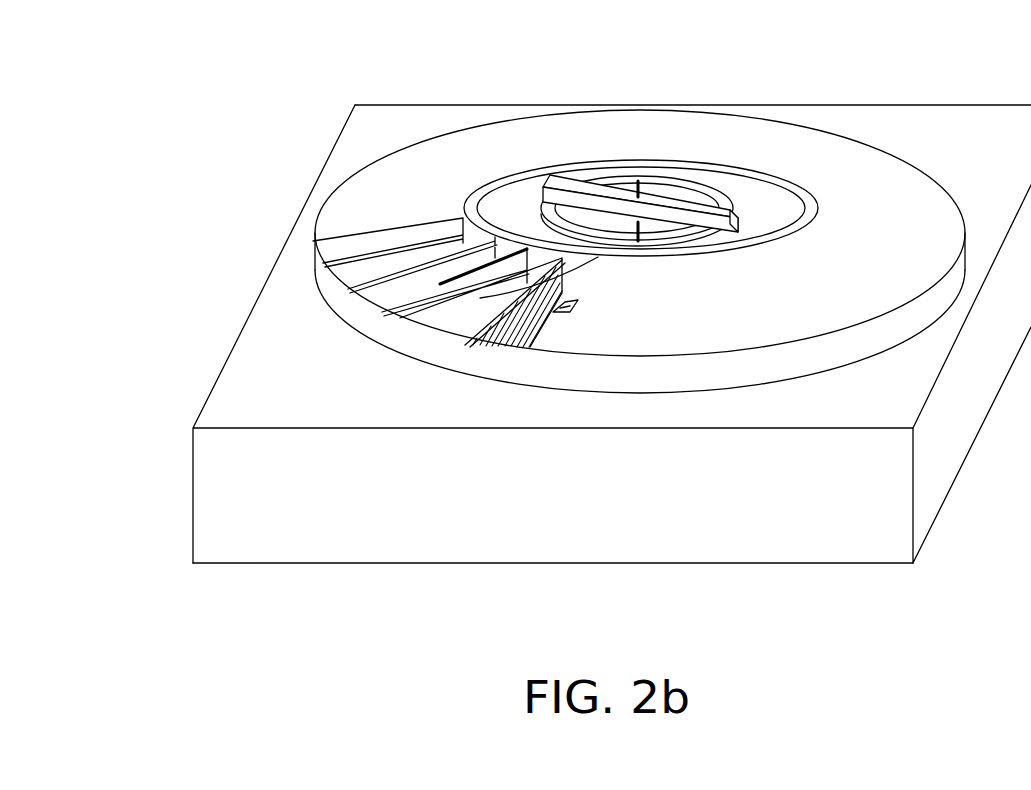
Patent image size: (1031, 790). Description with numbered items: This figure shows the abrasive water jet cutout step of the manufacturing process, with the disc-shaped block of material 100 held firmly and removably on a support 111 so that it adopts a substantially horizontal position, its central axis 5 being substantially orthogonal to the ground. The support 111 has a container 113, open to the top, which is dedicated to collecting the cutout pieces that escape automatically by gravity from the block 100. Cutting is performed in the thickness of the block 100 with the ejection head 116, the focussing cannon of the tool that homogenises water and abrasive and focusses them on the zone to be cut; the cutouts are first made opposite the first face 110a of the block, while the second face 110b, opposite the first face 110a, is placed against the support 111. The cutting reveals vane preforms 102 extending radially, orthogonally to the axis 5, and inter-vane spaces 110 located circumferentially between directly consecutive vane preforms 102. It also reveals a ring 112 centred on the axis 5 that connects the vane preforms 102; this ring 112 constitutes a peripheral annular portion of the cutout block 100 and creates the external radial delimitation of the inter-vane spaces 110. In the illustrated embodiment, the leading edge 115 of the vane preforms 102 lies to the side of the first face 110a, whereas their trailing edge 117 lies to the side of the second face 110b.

The block of material 100 is at (868, 122).
The support 111 is at (380, 105).
The container 113 is at (682, 517).
The inter-vane spaces 110 is at (335, 248).
The first face 110a is at (797, 315).
The second face 110b is at (640, 393).
The ring 112 is at (390, 333).
The leading edge 115 is at (462, 225).
The central axis 5 is at (637, 181).
The vane preforms 102 is at (382, 222).
The trailing edge 117 is at (408, 303).
The ejection head 116 is at (596, 298).